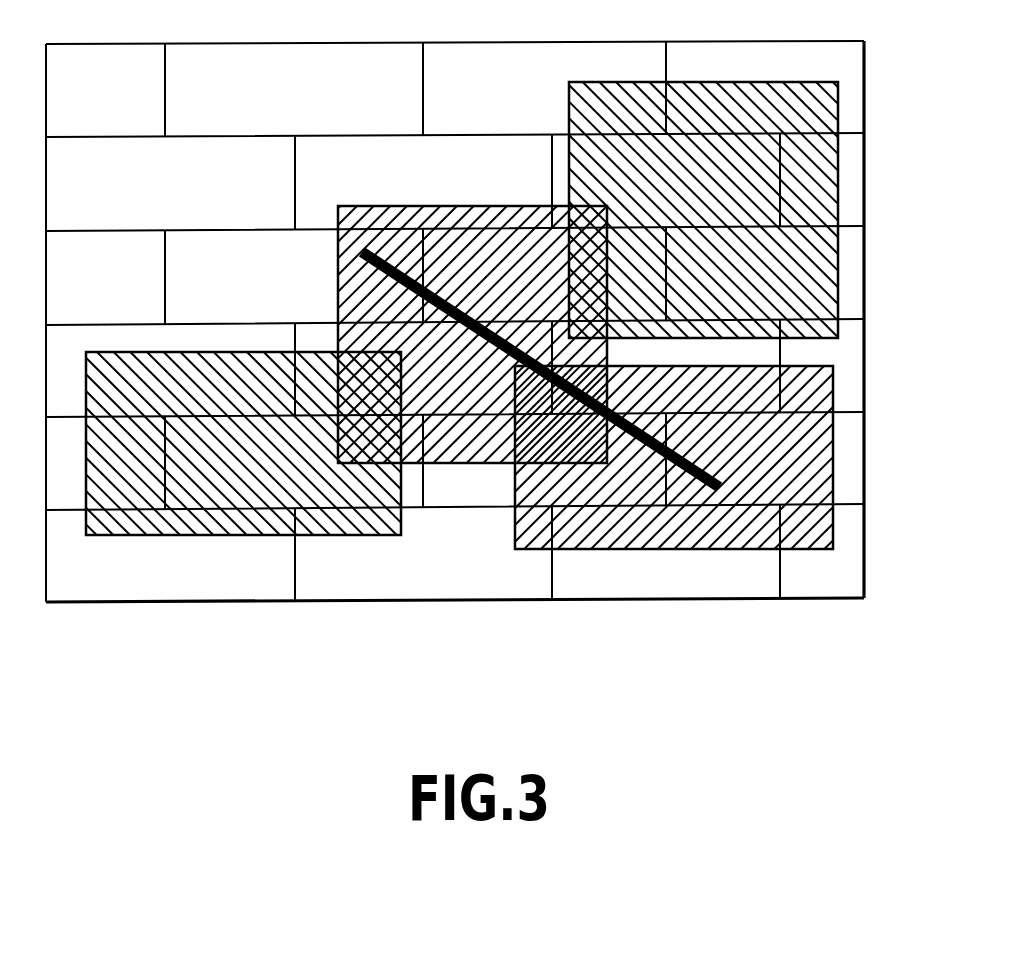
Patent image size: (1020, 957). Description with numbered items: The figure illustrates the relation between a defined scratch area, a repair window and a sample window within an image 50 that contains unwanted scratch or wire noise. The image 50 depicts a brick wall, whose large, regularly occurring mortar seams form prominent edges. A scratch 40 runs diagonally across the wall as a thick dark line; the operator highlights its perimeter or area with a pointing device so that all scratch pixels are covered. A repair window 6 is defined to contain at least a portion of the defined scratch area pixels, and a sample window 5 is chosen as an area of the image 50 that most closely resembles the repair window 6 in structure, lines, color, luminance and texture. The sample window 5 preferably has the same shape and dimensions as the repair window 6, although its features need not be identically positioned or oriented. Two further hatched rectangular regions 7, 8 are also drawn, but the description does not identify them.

The sample window 5 is at (567, 97).
The repair window 6 is at (457, 206).
The third pattern region 7 is at (235, 352).
The fourth pattern region 8 is at (833, 454).
The scratch 40 is at (685, 491).
The image 50 is at (799, 614).